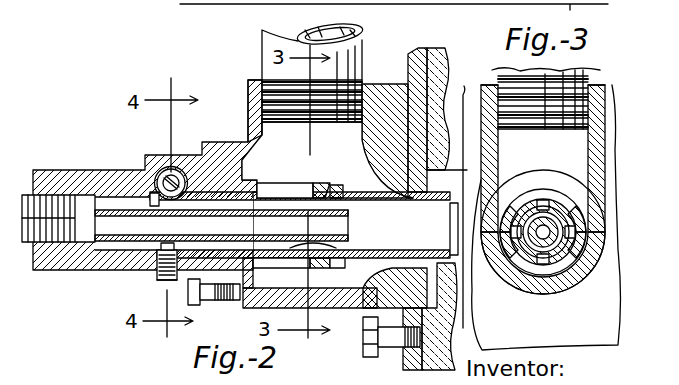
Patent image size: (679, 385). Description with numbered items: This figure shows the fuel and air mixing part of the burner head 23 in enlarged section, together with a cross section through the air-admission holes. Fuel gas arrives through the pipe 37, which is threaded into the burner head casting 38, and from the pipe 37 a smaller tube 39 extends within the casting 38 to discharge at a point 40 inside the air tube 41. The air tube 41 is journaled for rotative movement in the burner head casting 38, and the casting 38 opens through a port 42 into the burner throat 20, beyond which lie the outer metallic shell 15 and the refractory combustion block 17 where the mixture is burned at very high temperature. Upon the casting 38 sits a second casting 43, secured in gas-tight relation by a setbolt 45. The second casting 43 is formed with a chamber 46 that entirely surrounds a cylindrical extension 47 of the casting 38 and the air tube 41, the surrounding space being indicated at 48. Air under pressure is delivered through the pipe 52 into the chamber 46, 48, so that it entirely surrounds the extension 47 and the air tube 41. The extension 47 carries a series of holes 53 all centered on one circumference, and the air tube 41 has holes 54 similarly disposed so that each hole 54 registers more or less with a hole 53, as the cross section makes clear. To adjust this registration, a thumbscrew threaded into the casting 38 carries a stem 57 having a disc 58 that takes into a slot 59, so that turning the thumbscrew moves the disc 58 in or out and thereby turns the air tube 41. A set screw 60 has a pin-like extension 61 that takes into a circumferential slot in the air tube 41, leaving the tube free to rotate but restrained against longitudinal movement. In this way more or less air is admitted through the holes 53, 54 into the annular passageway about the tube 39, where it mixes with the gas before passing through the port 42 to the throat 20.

In FIG. 2, the outer metallic shell 15 is at (410, 62).
In FIG. 2, the refractory combustion block 17 is at (445, 100).
In FIG. 2, the burner throat 20 is at (471, 215).
In FIG. 2, the burner head 23 is at (380, 120).
In FIG. 3, the burner head 23 is at (539, 305).
In FIG. 2, the pipe 37 is at (24, 236).
In FIG. 2, the burner head casting 38 is at (97, 270).
In FIG. 2, the tube 39 is at (110, 180).
In FIG. 2, the discharge point 40 is at (350, 226).
In FIG. 3, the discharge point 40 is at (532, 248).
In FIG. 2, the air tube 41 is at (366, 197).
In FIG. 3, the air tube 41 is at (507, 278).
In FIG. 2, the port 42 is at (452, 218).
In FIG. 2, the second casting 43 is at (252, 118).
In FIG. 3, the second casting 43 is at (484, 118).
In FIG. 2, the setbolt 45 is at (203, 306).
In FIG. 2, the chamber 46 is at (277, 133).
In FIG. 3, the chamber 46 is at (582, 143).
In FIG. 2, the cylindrical extension 47 is at (328, 186).
In FIG. 3, the cylindrical extension 47 is at (560, 197).
In FIG. 2, the chamber portion 48 is at (262, 275).
In FIG. 2, the pipe 52 is at (265, 36).
In FIG. 2, the holes 53 is at (284, 188).
In FIG. 3, the holes 53 is at (538, 196).
In FIG. 2, the holes 54 is at (296, 196).
In FIG. 3, the holes 54 is at (548, 198).
In FIG. 2, the stem 57 is at (173, 170).
In FIG. 2, the disc 58 is at (163, 181).
In FIG. 2, the slot 59 is at (151, 194).
In FIG. 2, the set screw 60 is at (158, 279).
In FIG. 2, the pin-like extension 61 is at (132, 266).